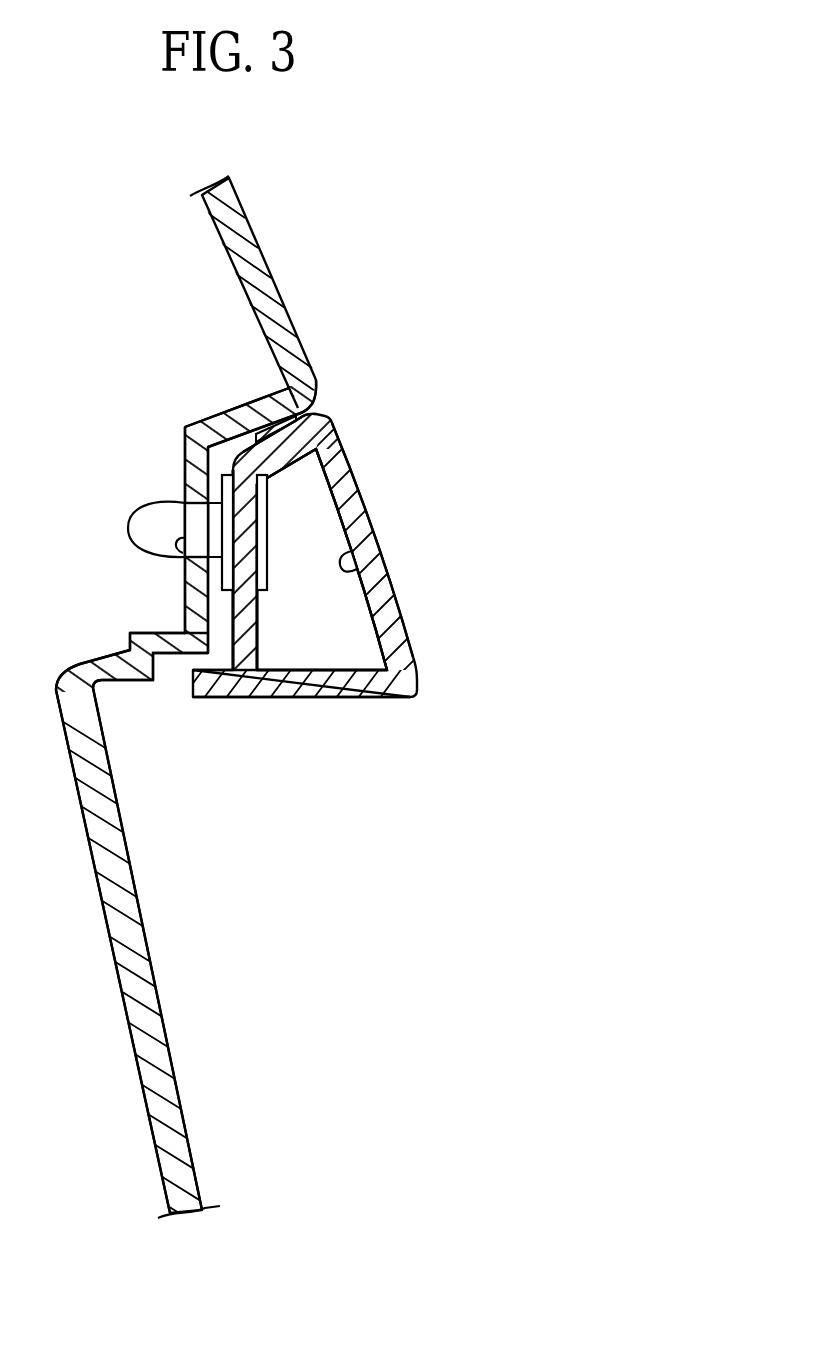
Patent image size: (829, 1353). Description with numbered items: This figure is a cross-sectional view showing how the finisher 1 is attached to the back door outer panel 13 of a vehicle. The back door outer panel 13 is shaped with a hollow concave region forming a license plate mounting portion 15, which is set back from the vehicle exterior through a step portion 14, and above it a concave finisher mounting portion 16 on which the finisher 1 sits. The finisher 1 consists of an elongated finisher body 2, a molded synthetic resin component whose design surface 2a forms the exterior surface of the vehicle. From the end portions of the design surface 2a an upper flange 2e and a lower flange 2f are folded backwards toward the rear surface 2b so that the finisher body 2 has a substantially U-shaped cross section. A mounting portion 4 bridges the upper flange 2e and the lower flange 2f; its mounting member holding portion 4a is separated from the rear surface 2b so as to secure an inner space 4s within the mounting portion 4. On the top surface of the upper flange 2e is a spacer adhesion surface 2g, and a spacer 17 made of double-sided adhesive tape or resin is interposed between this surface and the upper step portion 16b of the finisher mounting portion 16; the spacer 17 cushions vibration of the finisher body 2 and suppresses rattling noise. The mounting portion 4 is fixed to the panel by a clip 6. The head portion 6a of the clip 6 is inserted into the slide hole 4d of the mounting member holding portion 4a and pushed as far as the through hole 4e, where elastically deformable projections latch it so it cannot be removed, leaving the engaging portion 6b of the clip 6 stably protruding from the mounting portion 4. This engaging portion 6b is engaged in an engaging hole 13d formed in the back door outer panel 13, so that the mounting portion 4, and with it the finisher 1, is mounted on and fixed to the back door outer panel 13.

The finisher 1 is at (450, 395).
The finisher body 2 is at (420, 637).
The design surface 2a is at (368, 521).
The rear surface 2b is at (382, 568).
The upper flange 2e is at (332, 447).
The lower flange 2f is at (355, 683).
The spacer adhesion surface 2g is at (238, 408).
The mounting portion 4 is at (340, 712).
The mounting member holding portion 4a is at (248, 560).
The slide hole 4d is at (272, 555).
The through hole 4e is at (274, 639).
The inner space 4s is at (343, 619).
The clip 6 is at (183, 503).
The head portion 6a is at (243, 534).
The engaging portion 6b is at (193, 545).
The back door outer panel 13 is at (283, 322).
The engaging hole 13d is at (183, 566).
The step portion 14 is at (124, 672).
The license plate mounting portion 15 is at (152, 1045).
The finisher mounting portion 16 is at (183, 602).
The upper step portion 16b is at (184, 443).
The spacer 17 is at (282, 396).